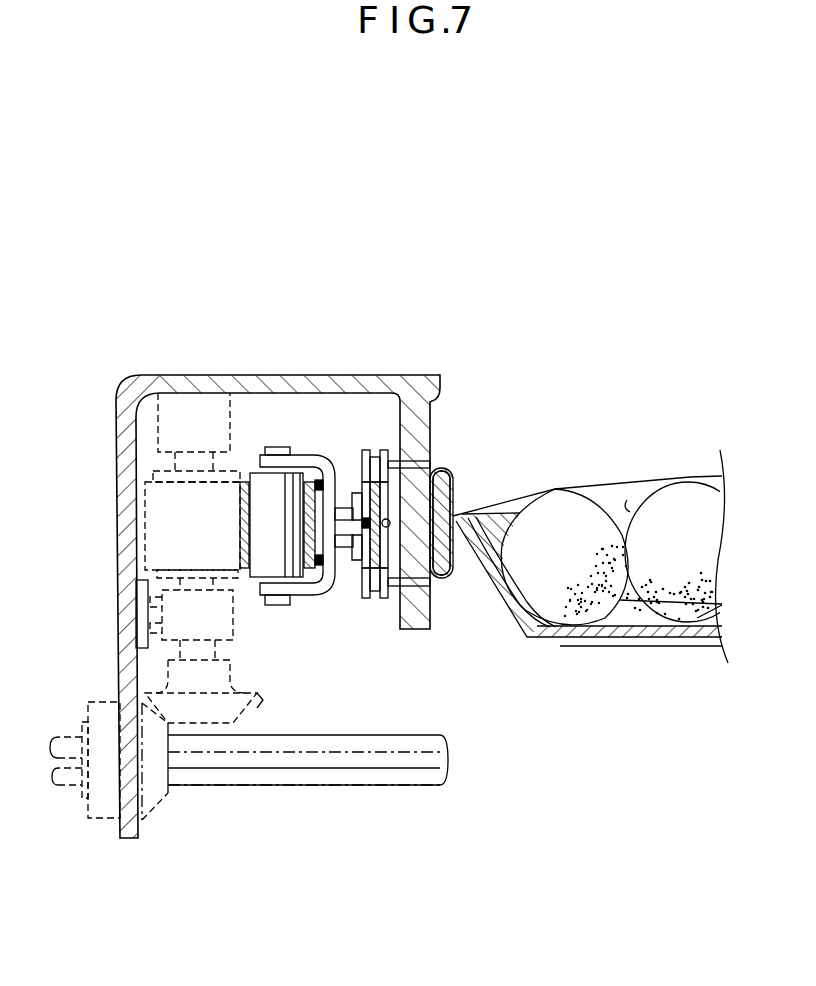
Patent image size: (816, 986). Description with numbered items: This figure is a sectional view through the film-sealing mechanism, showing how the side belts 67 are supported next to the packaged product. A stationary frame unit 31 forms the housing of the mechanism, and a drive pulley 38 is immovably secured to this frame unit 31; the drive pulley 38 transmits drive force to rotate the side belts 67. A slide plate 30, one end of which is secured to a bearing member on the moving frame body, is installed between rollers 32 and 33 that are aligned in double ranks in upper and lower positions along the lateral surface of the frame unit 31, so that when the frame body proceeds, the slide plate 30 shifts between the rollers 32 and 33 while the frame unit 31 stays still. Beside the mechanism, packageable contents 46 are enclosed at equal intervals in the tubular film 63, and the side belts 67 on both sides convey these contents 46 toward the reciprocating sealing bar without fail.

The slide plate 30 is at (352, 488).
The frame unit 31 is at (420, 433).
The roller 32 is at (377, 451).
The roller 33 is at (378, 598).
The drive pulley 38 is at (165, 468).
The packageable contents 46 is at (652, 538).
The tubular film 63 is at (612, 482).
The side belt 67 is at (302, 520).